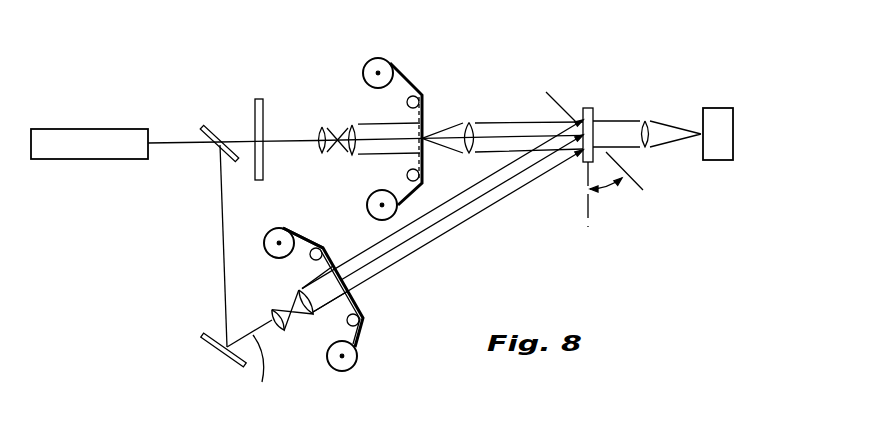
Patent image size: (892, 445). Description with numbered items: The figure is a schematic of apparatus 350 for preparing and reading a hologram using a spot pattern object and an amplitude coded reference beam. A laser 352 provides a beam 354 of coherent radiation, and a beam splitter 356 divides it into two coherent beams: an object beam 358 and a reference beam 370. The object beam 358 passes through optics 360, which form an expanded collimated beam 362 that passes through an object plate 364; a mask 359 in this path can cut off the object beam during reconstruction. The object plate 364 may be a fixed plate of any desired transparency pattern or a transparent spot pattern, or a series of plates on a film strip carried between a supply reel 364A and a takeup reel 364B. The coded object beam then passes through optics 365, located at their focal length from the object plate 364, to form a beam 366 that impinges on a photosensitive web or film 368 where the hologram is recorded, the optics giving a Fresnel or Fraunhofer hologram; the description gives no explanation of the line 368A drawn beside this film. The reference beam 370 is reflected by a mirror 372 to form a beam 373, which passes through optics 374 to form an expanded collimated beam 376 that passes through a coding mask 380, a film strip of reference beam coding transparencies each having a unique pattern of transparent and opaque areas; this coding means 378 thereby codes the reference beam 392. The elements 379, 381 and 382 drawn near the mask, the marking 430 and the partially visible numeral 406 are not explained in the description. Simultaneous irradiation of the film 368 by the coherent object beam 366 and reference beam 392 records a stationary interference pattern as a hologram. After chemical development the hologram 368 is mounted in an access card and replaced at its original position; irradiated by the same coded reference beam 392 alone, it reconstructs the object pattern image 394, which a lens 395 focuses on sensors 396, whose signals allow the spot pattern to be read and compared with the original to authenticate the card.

The optical system 350 is at (148, 233).
The laser 352 is at (70, 128).
The beam 354 is at (163, 142).
The beam splitter 356 is at (218, 127).
The object beam 358 is at (297, 141).
The mask 359 is at (263, 99).
The optics 360 is at (338, 127).
The expanded collimated beam 362 is at (380, 155).
The object plate 364 is at (427, 92).
The supply reel 364A is at (378, 60).
The takeup reel 364B is at (368, 197).
The optics 365 is at (471, 123).
The beam 366 is at (529, 122).
The photosensitive web or film 368 is at (588, 108).
The plate orientation line 368A is at (643, 190).
The beam 370 is at (222, 265).
The mirror 372 is at (200, 350).
The beam 373 is at (249, 370).
The optics 374 is at (297, 319).
The expanded collimated beam 376 is at (330, 308).
The reference beam coding means 378 is at (367, 320).
The film supply roller 379 is at (275, 230).
The coding mask 380 is at (298, 235).
The beam to film 381 is at (327, 266).
The film takeup roller 382 is at (350, 364).
The reference beam 392 is at (502, 198).
The object pattern image 394 is at (620, 121).
The lens 395 is at (646, 121).
The sensors 396 is at (698, 110).
The angle 430 is at (608, 188).
The element (partially shown) 406 is at (594, 442).